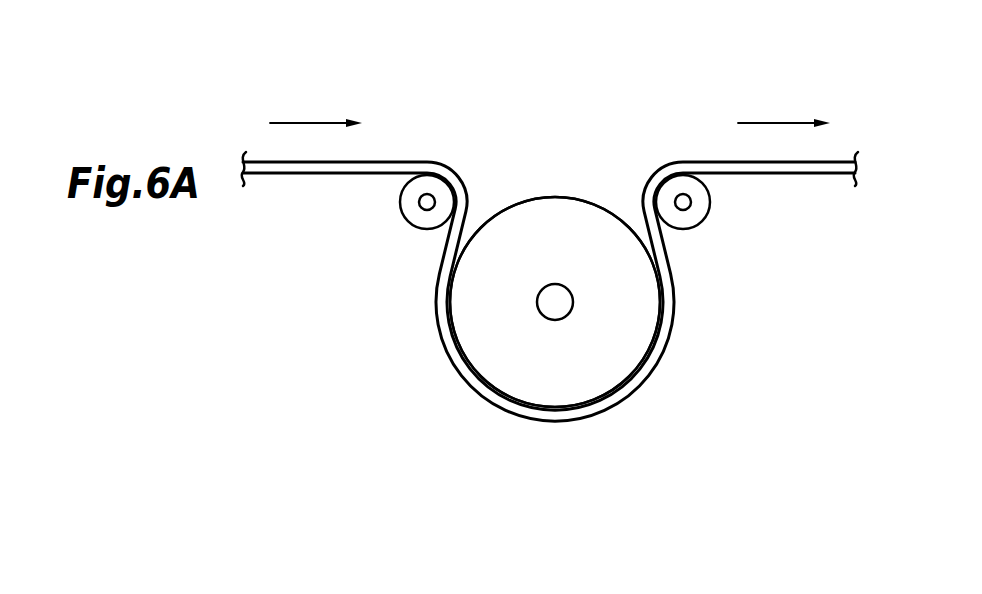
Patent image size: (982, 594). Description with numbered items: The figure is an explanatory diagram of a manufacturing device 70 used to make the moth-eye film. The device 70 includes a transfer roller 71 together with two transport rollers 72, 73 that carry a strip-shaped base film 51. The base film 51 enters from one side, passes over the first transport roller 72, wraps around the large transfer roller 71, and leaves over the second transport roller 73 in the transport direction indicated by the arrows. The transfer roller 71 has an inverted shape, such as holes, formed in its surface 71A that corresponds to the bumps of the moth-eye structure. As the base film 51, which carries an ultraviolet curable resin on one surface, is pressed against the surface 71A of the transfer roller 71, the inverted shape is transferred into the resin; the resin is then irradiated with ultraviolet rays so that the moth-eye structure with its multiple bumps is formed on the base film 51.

The manufacturing device 70 is at (598, 74).
The base film 51 is at (408, 161).
The transfer roller 71 is at (612, 369).
The surface 71A is at (537, 196).
The transport roller 72 is at (403, 216).
The transport roller 73 is at (692, 222).